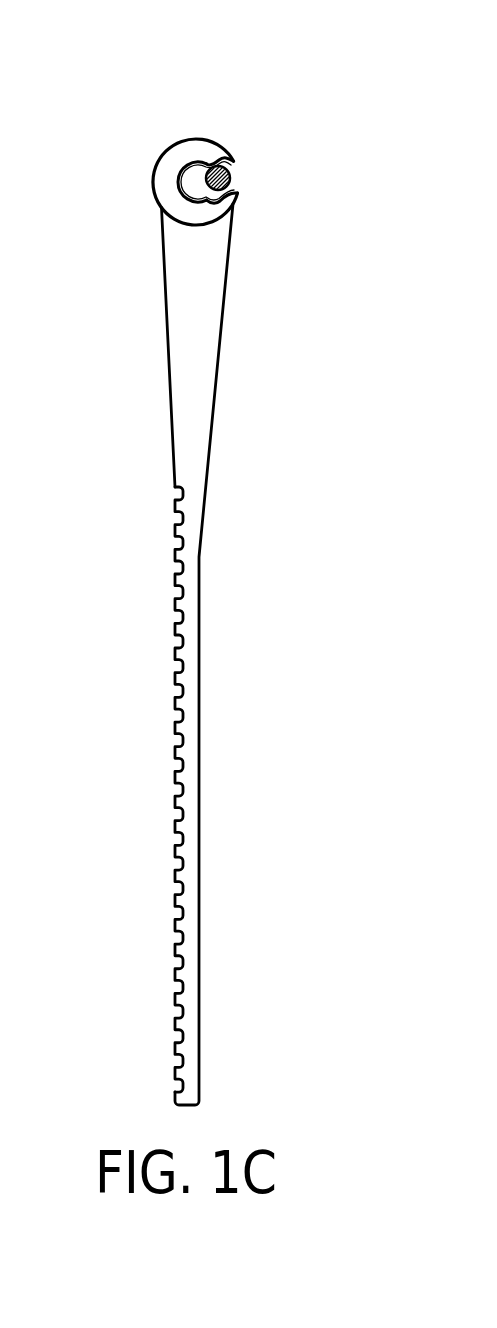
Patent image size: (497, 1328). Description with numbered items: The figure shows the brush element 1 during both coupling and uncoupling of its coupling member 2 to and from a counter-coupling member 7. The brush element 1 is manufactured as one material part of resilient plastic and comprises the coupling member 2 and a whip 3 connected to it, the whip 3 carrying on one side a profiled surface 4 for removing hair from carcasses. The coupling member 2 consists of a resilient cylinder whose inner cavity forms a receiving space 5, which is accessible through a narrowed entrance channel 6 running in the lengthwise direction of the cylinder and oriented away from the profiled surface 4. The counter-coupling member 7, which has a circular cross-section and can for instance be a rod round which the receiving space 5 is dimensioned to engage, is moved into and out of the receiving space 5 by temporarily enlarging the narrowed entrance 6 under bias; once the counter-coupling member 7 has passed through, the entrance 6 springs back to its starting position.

The brush element 1 is at (85, 90).
The coupling member 2 is at (175, 160).
The whips 3 is at (183, 385).
The profiled surface 4 is at (173, 737).
The receiving space 5 is at (197, 175).
The narrowed entrance channel 6 is at (233, 167).
The counter-coupling member 7 is at (233, 177).